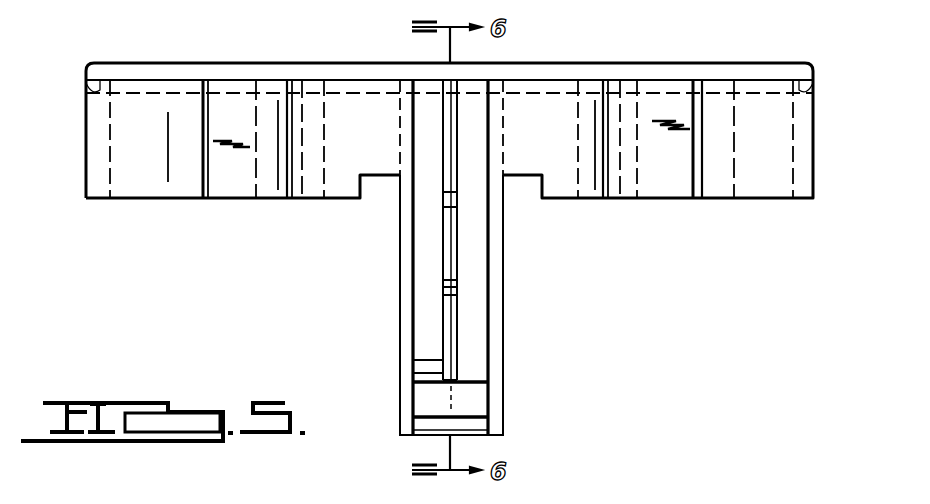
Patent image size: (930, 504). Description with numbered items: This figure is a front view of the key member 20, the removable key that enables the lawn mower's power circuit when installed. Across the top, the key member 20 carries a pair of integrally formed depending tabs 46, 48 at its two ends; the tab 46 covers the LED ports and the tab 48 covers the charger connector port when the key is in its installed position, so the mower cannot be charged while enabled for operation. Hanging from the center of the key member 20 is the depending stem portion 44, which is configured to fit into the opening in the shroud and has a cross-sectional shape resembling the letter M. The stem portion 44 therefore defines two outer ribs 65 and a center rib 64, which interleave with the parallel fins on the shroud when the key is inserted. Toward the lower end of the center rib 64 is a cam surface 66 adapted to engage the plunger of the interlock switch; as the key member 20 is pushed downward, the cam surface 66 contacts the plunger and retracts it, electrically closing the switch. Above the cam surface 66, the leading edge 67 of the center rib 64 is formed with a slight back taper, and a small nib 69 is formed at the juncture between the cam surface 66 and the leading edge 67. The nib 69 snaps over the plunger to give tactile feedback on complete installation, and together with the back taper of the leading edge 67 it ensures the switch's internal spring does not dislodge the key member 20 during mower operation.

The key member 20 is at (246, 217).
The stem portion 44 is at (503, 247).
The depending tab 46 is at (777, 142).
The depending tab 48 is at (122, 150).
The center rib 64 is at (443, 265).
The outer ribs 65 is at (400, 327).
The cam surface 66 is at (457, 335).
The leading edge 67 is at (443, 232).
The nib 69 is at (457, 293).